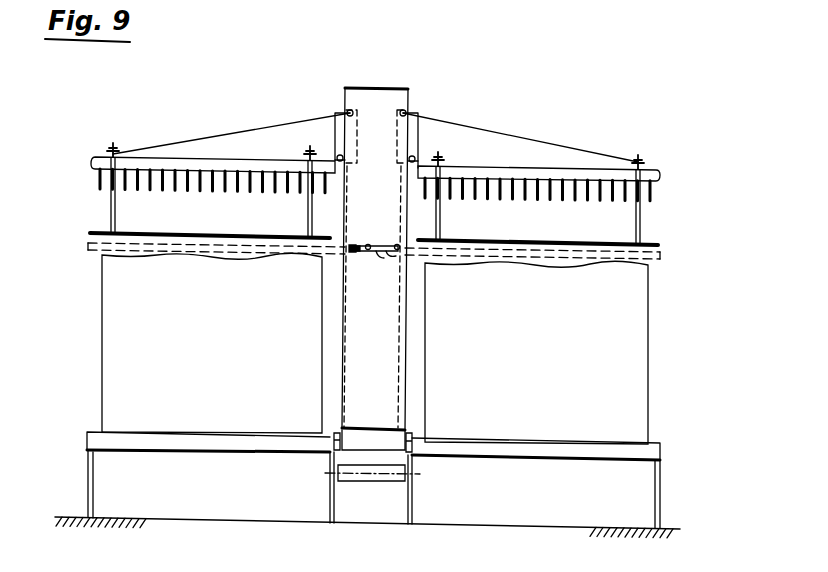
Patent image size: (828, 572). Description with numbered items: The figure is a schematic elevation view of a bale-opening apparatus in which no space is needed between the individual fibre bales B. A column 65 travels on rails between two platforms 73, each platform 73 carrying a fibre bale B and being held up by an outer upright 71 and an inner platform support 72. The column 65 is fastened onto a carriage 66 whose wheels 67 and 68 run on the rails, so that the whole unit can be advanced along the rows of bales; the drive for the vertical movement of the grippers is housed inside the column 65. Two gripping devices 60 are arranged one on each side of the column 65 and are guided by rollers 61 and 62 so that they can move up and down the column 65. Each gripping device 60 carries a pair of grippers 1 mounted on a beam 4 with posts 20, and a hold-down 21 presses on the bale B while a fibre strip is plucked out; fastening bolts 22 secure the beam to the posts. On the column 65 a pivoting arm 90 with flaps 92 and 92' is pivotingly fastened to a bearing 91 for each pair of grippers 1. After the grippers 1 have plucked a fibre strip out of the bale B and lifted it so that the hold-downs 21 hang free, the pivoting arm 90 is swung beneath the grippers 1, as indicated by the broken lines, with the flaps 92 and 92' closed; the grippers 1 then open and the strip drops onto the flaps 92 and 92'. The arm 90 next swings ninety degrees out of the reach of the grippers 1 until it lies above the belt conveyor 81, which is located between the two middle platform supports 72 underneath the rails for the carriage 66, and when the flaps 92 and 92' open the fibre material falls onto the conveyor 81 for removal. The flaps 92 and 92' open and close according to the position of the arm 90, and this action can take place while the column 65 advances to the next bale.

The gripper 1 is at (98, 181).
The comb rail 4 is at (147, 166).
The support posts 20 is at (108, 208).
The hold-down 21 is at (165, 233).
The fastening bolts 22 is at (111, 150).
The gripping device 60 is at (195, 141).
The roller 61 is at (348, 111).
The roller 62 is at (338, 155).
The column 65 is at (376, 92).
The carriage 66 is at (373, 440).
The wheel 67 is at (335, 431).
The wheel 68 is at (411, 435).
The upright 71 is at (90, 488).
The platform support 72 is at (330, 490).
The platform 73 is at (98, 438).
The belt conveyor 81 is at (374, 478).
The pivoting arm 90 is at (362, 246).
The bearing 91 is at (352, 246).
The flap 92 is at (390, 273).
The flap 92' is at (372, 287).
The fibre bale B is at (375, 348).